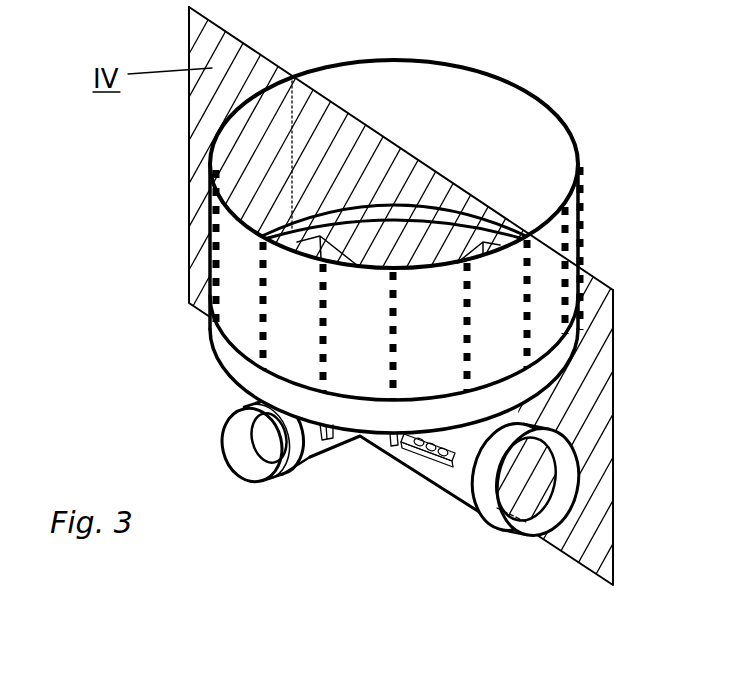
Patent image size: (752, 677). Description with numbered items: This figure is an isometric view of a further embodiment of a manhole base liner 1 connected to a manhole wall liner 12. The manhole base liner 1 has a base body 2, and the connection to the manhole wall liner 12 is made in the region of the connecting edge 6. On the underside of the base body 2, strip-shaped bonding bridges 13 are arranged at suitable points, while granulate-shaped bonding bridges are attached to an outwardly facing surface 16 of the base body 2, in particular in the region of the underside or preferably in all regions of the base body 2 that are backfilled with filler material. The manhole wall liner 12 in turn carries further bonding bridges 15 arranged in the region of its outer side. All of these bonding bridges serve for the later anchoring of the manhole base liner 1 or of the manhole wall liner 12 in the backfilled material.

The manhole base liner 1 is at (203, 418).
The base body 2 is at (338, 453).
The connecting edge 6 is at (243, 366).
The manhole wall liner 12 is at (505, 106).
The strip-shaped bonding bridges 13 is at (437, 450).
The bonding bridges 15 is at (583, 240).
The outwardly facing surface 16 is at (379, 434).